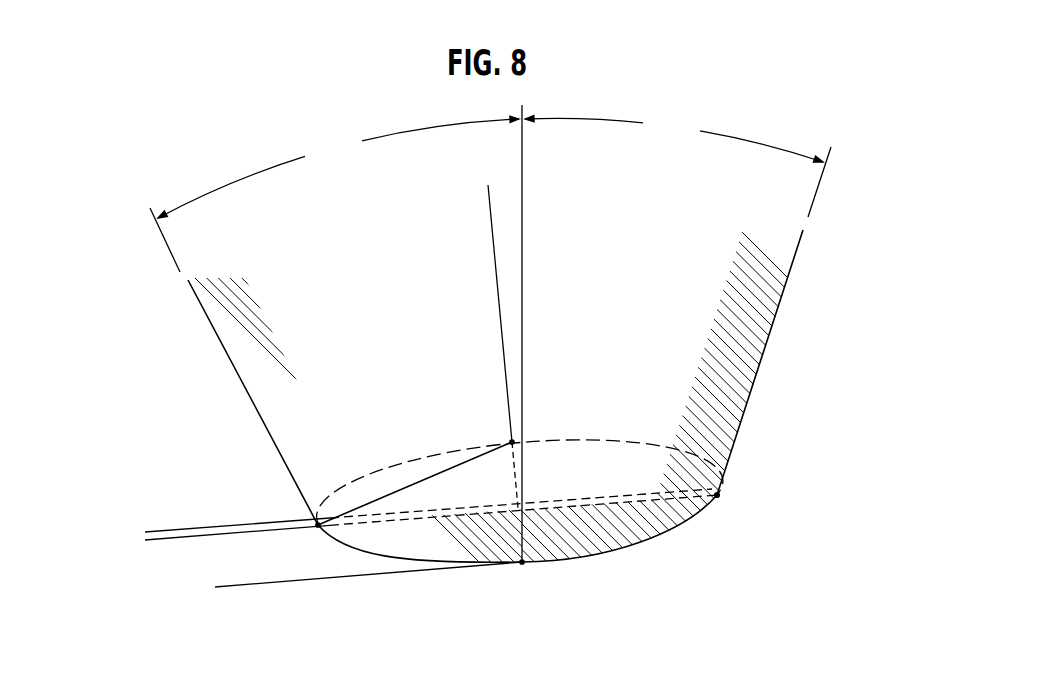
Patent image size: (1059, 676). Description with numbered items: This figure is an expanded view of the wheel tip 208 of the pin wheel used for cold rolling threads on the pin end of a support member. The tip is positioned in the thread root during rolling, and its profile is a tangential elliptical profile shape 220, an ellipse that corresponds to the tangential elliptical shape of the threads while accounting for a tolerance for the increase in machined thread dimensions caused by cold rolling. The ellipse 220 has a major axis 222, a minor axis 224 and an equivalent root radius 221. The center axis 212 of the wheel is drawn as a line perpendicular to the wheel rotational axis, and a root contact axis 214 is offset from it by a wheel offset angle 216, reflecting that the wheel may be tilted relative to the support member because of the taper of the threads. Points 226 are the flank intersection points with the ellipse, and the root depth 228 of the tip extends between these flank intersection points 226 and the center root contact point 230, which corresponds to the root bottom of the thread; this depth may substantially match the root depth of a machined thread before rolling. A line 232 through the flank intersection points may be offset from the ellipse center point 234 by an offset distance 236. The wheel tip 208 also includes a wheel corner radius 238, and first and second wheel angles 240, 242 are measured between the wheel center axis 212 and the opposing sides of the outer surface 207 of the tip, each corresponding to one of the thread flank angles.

The outer surface 207 is at (222, 348).
The wheel tip 208 is at (339, 245).
The center axis 212 is at (523, 299).
The root contact axis 214 is at (497, 289).
The wheel offset angle 216 is at (458, 203).
The tangential elliptical profile shape 220 is at (568, 442).
The equivalent root radius 221 is at (423, 481).
The major axis 222 is at (694, 487).
The minor axis 224 is at (511, 463).
The flank intersection points 226 is at (719, 496).
The root depth 228 is at (227, 585).
The center root contact point 230 is at (522, 563).
The line 232 is at (487, 515).
The ellipse center point 234 is at (580, 497).
The offset distance 236 is at (155, 570).
The wheel corner radius 238 is at (707, 514).
The first wheel angle 240 is at (334, 194).
The second wheel angle 242 is at (678, 167).